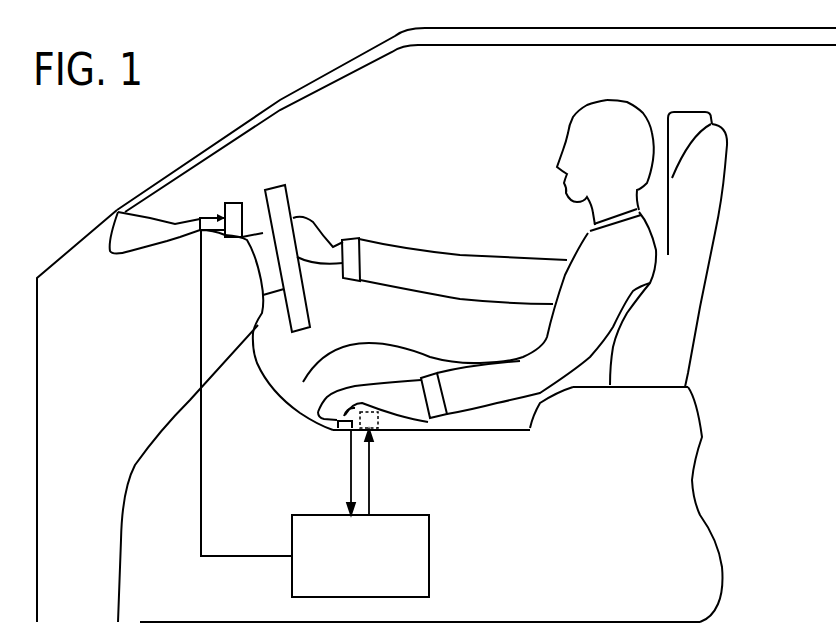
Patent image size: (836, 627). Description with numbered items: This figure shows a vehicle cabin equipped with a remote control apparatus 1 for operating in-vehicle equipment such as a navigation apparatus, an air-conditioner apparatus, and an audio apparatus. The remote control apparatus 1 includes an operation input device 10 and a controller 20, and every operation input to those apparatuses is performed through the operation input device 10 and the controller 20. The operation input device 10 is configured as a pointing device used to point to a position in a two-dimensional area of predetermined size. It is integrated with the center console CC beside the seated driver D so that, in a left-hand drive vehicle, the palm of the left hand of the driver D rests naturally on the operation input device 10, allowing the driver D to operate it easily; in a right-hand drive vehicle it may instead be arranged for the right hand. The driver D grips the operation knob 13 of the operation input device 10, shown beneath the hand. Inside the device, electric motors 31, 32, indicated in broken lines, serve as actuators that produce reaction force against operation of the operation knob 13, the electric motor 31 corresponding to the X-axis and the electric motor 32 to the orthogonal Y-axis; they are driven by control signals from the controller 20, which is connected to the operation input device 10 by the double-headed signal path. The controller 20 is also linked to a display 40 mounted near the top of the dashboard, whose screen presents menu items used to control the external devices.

The remote control apparatus 1 is at (493, 452).
The operation input device 10 is at (413, 430).
The operation knob 13 is at (347, 394).
The controller 20 is at (429, 557).
The electric motor 31 is at (401, 457).
The electric motor 32 is at (380, 417).
The display 40 is at (233, 203).
The driver D is at (613, 100).
The center console CC is at (297, 462).